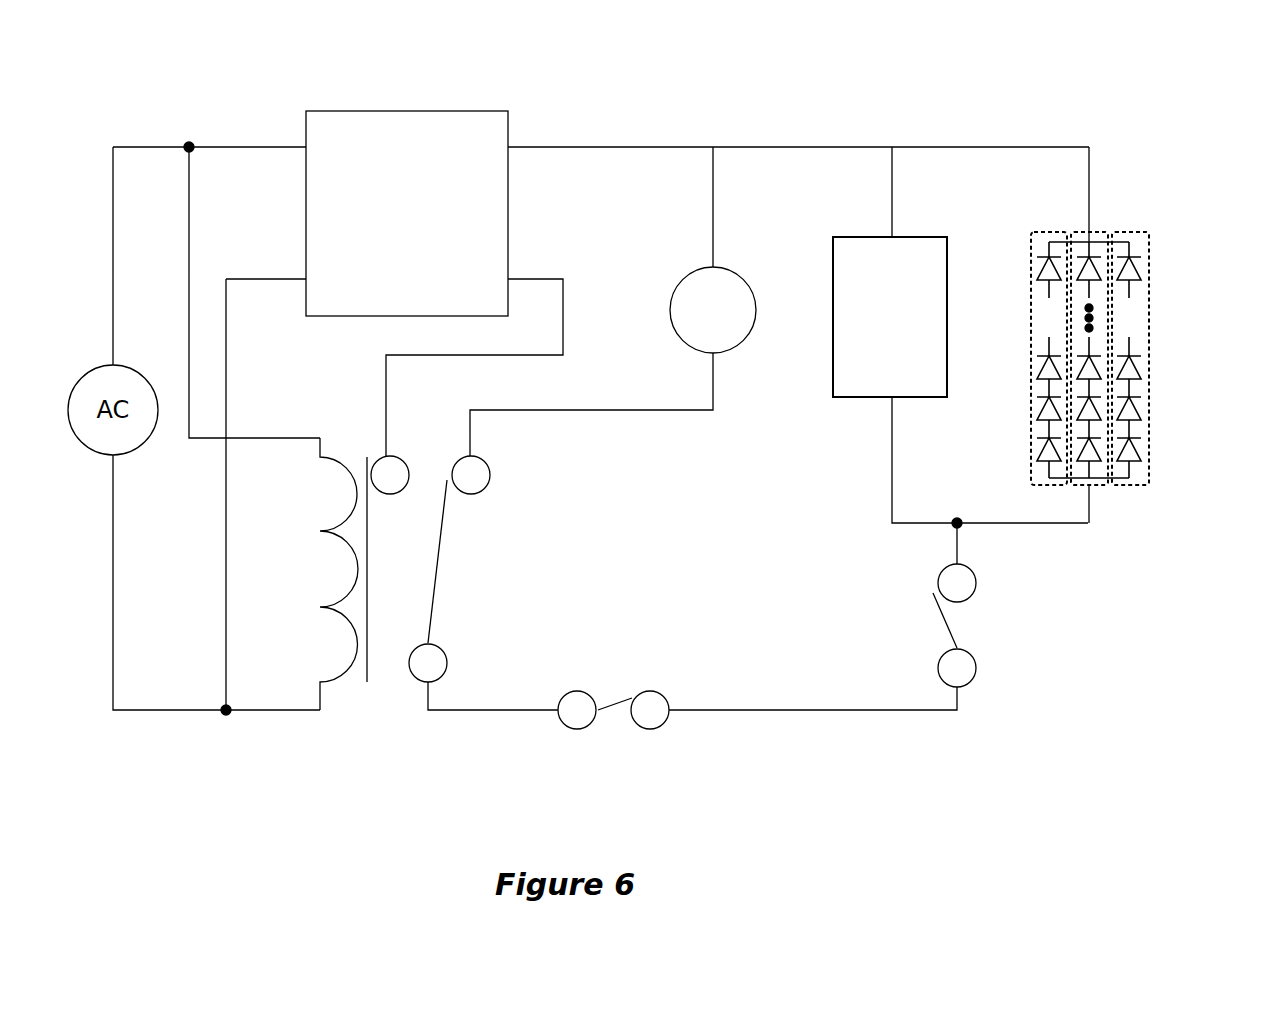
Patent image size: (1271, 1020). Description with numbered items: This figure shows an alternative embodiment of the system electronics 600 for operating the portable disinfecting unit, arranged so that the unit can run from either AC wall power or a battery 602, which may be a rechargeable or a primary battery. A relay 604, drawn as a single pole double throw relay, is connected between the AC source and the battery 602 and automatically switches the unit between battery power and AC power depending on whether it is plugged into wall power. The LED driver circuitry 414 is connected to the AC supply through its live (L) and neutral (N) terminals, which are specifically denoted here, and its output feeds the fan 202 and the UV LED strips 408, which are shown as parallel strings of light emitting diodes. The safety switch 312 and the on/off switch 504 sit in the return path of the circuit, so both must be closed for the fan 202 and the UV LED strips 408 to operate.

The system electronics 600 is at (765, 92).
The battery 602 is at (680, 283).
The relay 604 is at (395, 708).
The UV LED strips 408 is at (1147, 300).
The safety switch 312 is at (588, 692).
The on/off switch 504 is at (973, 665).
The LED driver circuitry 414 is at (407, 213).
The fan 202 is at (890, 317).